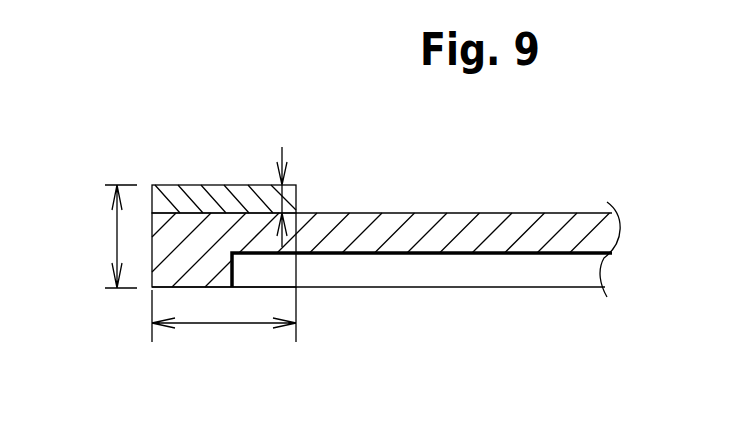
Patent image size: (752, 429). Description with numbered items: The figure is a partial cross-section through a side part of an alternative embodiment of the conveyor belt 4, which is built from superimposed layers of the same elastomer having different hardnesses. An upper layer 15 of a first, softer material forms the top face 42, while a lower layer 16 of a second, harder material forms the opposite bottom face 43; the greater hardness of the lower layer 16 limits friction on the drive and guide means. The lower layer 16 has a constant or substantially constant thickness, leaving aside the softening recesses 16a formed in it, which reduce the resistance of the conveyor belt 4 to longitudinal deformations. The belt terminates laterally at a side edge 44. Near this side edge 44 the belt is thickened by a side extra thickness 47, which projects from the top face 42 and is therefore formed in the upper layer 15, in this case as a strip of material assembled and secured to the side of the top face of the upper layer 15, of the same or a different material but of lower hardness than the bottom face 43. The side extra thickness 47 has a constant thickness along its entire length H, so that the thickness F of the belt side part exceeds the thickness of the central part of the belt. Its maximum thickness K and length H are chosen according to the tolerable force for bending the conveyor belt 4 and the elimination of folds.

The conveyor belt 4 is at (533, 193).
The upper layer 15 is at (420, 216).
The lower layer 16 is at (558, 296).
The softening recesses 16a is at (473, 266).
The top face 42 is at (393, 179).
The bottom face 43 is at (381, 315).
The side edge 44 is at (139, 268).
The side extra thickness 47 is at (191, 173).
The maximum thickness K is at (263, 188).
The thickness of belt side part F is at (112, 238).
The length of side extra thickness H is at (240, 326).